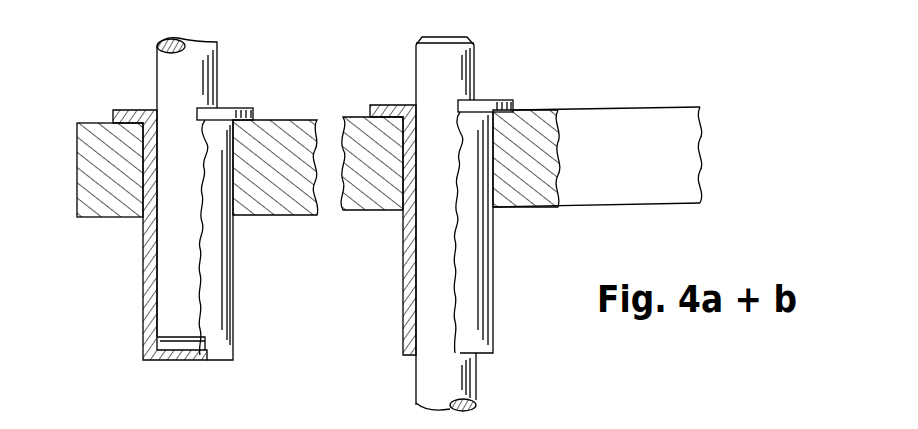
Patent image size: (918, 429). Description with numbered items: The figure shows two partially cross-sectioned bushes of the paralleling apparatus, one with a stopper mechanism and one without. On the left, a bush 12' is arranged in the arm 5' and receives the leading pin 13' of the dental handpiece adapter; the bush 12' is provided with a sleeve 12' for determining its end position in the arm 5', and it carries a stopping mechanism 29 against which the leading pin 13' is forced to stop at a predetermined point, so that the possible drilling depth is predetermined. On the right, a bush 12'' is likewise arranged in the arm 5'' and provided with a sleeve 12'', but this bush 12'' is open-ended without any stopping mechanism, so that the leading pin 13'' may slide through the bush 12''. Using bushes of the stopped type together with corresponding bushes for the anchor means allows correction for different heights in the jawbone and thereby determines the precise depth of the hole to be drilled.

In FIG. 4A, the leading pin 13' is at (226, 193).
In FIG. 4A, the bush 12' is at (224, 245).
In FIG. 4A, the second arm 5' is at (194, 202).
In FIG. 4A, the stopping mechanism 29 is at (200, 360).
In FIG. 4B, the leading pin 13'' is at (490, 216).
In FIG. 4B, the bush 12'' is at (488, 224).
In FIG. 4B, the second arm 5'' is at (521, 184).